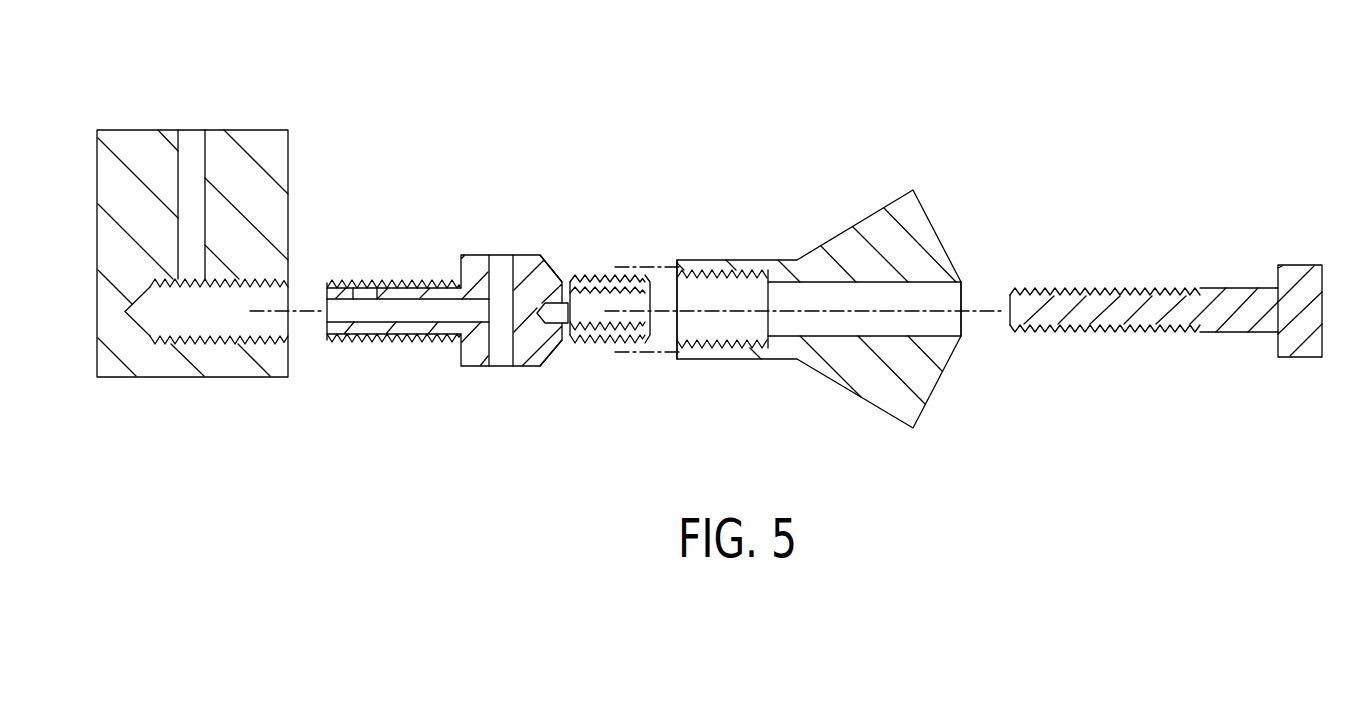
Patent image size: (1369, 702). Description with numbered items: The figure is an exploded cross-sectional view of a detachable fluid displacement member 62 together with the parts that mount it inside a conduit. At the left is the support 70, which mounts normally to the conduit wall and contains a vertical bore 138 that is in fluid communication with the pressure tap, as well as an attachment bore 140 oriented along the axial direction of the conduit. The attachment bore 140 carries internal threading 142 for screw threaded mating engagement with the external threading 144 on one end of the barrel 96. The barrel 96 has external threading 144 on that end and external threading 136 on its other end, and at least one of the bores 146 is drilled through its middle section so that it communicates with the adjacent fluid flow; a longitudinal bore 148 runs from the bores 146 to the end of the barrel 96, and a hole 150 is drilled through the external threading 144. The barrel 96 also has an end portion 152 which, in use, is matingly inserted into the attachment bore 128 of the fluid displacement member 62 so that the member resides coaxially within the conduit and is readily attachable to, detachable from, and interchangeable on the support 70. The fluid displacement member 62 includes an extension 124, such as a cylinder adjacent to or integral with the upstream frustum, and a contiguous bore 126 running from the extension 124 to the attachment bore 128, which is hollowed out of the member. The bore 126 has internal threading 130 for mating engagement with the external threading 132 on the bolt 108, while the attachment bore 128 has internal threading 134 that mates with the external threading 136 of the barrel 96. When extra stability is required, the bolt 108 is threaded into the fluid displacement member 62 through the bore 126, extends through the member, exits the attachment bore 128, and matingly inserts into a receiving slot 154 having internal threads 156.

The support 70 is at (97, 142).
The vertical bore 138 is at (190, 137).
The internal threading 142 is at (247, 330).
The attachment bore 140 is at (273, 318).
The barrel 96 is at (532, 254).
The external threading 144 is at (337, 283).
The hole 150 is at (368, 290).
The longitudinal bore 148 is at (408, 323).
The bores 146 is at (500, 258).
The receiving slot 154 is at (553, 308).
The end portion 152 is at (570, 340).
The external threading 136 is at (612, 348).
The internal threads 156 is at (633, 323).
The fluid displacement member 62 is at (862, 224).
The extension 124 is at (712, 265).
The internal threading 134 is at (716, 333).
The attachment bore 128 is at (820, 283).
The internal threading 130 is at (900, 340).
The bore 126 is at (687, 293).
The external threading 132 is at (1098, 287).
The bolt 108 is at (1322, 270).